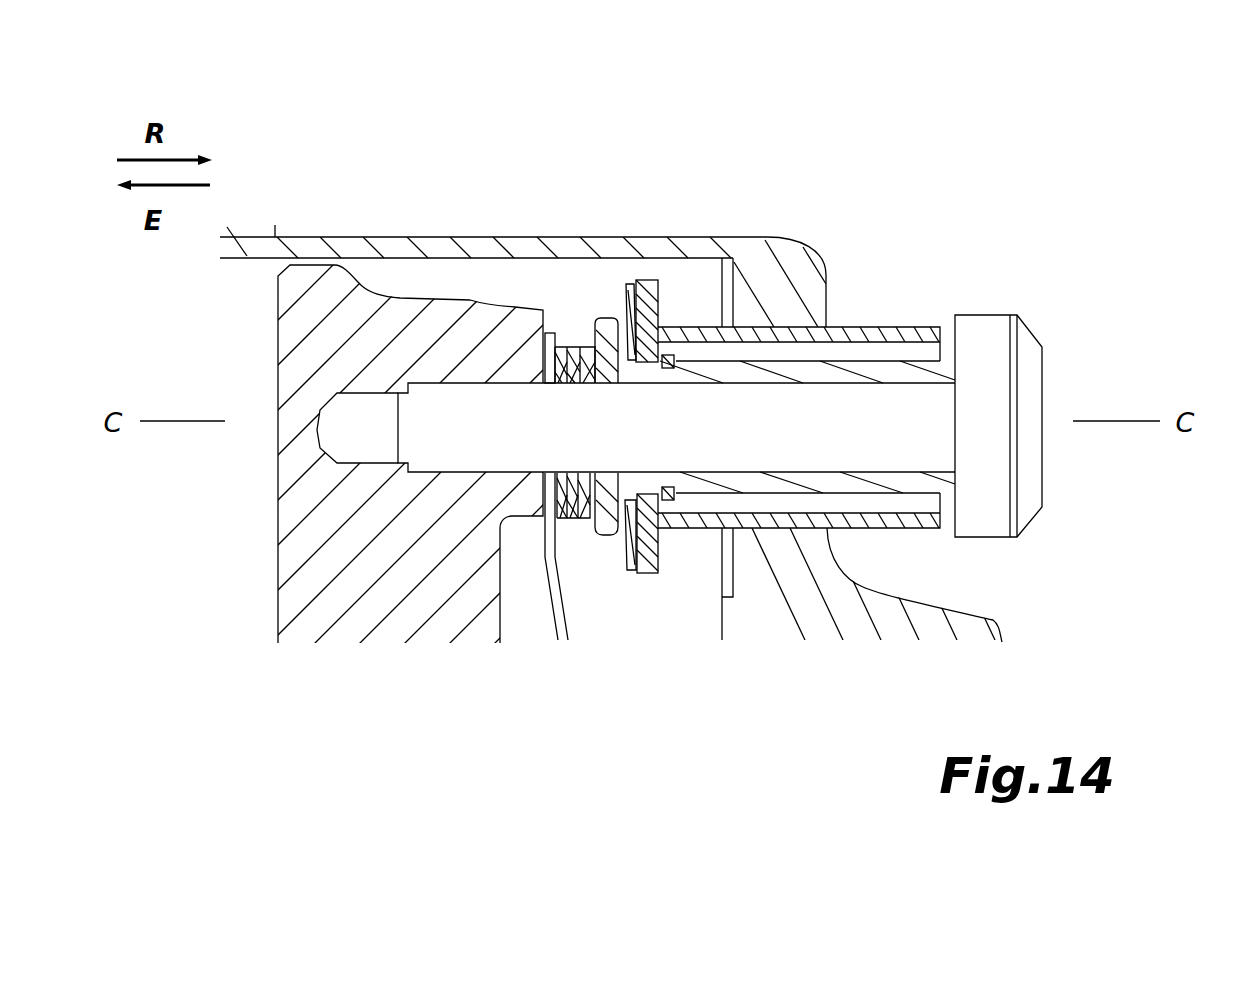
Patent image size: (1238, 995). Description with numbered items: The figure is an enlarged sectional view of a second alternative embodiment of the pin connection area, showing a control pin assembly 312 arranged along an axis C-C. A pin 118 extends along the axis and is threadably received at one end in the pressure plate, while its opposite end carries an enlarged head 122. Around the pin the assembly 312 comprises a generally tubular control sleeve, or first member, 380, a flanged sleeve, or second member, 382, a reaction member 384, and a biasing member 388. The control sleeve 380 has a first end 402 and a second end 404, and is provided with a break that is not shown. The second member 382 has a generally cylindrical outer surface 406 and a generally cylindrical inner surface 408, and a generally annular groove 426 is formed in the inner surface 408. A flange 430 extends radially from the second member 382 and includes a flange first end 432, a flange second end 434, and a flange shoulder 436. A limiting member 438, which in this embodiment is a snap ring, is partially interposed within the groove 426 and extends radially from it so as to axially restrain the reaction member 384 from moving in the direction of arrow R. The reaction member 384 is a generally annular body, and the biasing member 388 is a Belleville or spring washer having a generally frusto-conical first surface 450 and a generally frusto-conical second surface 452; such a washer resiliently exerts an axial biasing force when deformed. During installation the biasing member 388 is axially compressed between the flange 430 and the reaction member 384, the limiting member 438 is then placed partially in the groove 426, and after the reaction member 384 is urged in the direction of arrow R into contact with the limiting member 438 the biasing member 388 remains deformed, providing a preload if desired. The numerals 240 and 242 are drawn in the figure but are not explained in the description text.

The pin 118 is at (897, 418).
The enlarged head 122 is at (993, 333).
The retainer 240 is at (664, 295).
The washer 242 is at (640, 280).
The control pin assembly 312 is at (1062, 534).
The control sleeve 380 is at (837, 327).
The flanged sleeve 382 is at (885, 375).
The reaction member 384 is at (654, 280).
The biasing member 388 is at (628, 292).
The first end 402 is at (937, 330).
The second end 404 is at (722, 383).
The outer surface 406 is at (852, 352).
The inner surface 408 is at (922, 463).
The groove 426 is at (735, 575).
The flange 430 is at (548, 528).
The flange first end 432 is at (545, 506).
The flange second end 434 is at (641, 576).
The flange shoulder 436 is at (608, 537).
The limiting member 438 is at (670, 356).
The first surface 450 is at (652, 553).
The second surface 452 is at (612, 555).